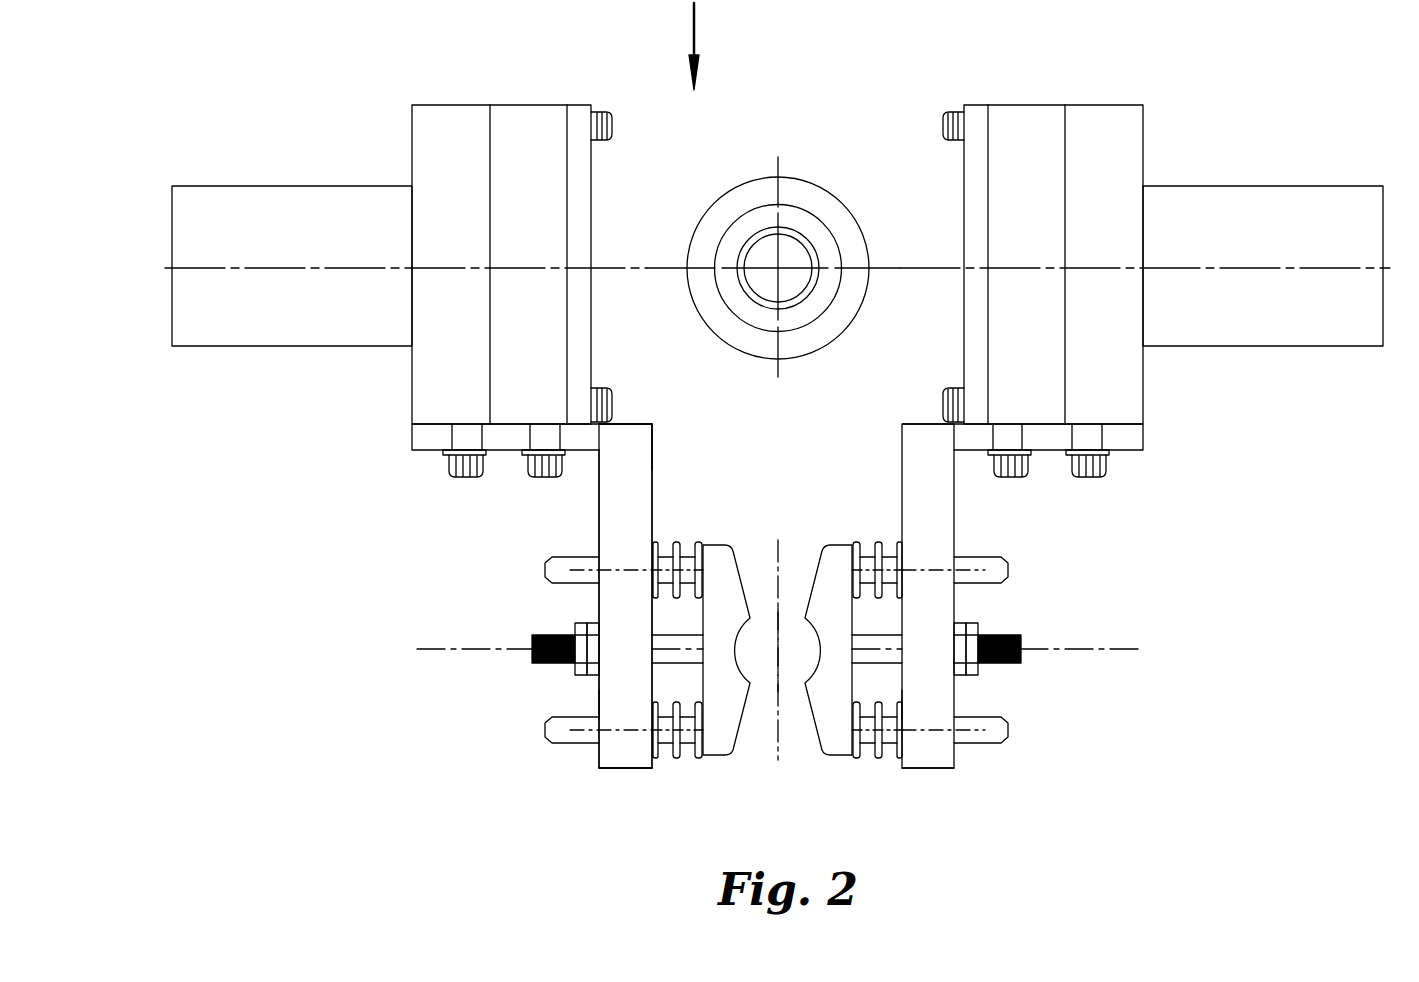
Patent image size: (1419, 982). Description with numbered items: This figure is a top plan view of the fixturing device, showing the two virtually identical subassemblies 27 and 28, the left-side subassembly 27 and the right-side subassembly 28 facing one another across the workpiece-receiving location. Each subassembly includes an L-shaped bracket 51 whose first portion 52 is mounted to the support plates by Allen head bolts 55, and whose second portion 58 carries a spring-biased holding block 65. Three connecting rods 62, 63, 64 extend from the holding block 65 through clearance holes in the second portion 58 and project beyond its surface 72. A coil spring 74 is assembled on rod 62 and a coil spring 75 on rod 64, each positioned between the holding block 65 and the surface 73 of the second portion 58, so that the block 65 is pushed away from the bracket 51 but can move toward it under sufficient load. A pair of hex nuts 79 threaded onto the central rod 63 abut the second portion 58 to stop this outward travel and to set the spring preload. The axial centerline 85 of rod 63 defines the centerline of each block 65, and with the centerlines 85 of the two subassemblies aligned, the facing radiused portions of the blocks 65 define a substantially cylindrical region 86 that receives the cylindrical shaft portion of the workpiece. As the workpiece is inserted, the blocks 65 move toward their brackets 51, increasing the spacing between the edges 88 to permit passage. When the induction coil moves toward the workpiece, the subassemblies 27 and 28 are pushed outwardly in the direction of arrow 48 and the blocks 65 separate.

The subassembly 27 is at (617, 780).
The subassembly 28 is at (1040, 722).
The arrow 48 is at (697, 18).
The L-shaped bracket 51 is at (597, 510).
The first portion 52 is at (428, 440).
The Allen head bolts 55 is at (537, 474).
The second portion 58 is at (605, 705).
The connecting rod 62 is at (550, 567).
The connecting rod 63 is at (545, 635).
The connecting rod 64 is at (548, 737).
The holding block 65 is at (736, 700).
The surface 72 is at (597, 467).
The surface 73 is at (653, 450).
The coil spring 74 is at (660, 542).
The coil spring 75 is at (684, 760).
The hex nuts 79 is at (580, 673).
The axial centerline 85 is at (425, 648).
The cylindrical region 86 is at (762, 622).
The edges 88 is at (748, 686).